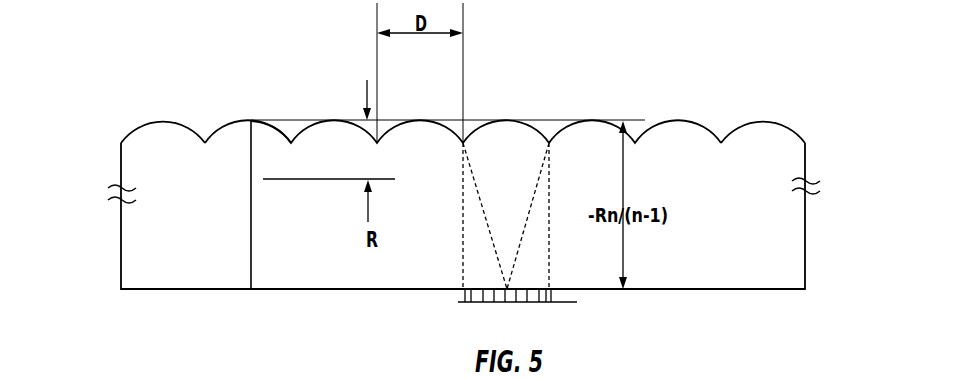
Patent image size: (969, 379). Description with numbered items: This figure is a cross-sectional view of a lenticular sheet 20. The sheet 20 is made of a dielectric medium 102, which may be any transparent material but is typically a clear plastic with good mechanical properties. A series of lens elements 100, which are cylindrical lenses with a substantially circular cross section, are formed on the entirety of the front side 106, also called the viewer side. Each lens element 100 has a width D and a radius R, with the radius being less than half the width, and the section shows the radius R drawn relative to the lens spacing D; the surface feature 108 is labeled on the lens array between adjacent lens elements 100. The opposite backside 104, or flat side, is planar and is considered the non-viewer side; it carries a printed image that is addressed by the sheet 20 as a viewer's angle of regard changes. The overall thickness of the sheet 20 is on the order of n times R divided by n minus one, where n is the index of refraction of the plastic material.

The lenticular sheet 20 is at (103, 137).
The lens element 100 is at (192, 125).
The dielectric medium 102 is at (753, 177).
The backside 104 is at (142, 290).
The front side 106 is at (177, 103).
The scallop surface transition 108 is at (278, 128).